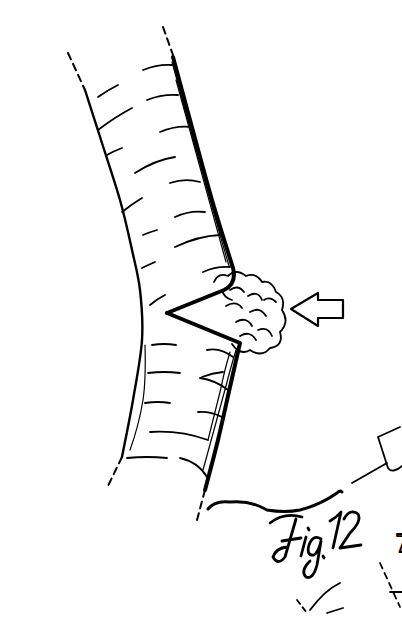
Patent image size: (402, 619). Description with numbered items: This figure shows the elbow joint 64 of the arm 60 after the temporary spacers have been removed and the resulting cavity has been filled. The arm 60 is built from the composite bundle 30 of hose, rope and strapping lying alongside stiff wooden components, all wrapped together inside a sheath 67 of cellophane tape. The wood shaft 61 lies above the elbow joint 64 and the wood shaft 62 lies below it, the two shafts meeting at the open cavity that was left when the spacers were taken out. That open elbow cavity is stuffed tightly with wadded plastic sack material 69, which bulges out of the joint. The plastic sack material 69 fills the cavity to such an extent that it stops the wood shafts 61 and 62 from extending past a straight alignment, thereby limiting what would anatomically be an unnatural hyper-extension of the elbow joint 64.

The composite bundle 30 is at (250, 270).
The arm 60 is at (220, 87).
The wood shaft 61 is at (212, 166).
The wood shaft 62 is at (240, 404).
The sheath 67 is at (242, 273).
The elbow joint 64 is at (112, 298).
The wadded plastic sack material 69 is at (251, 274).